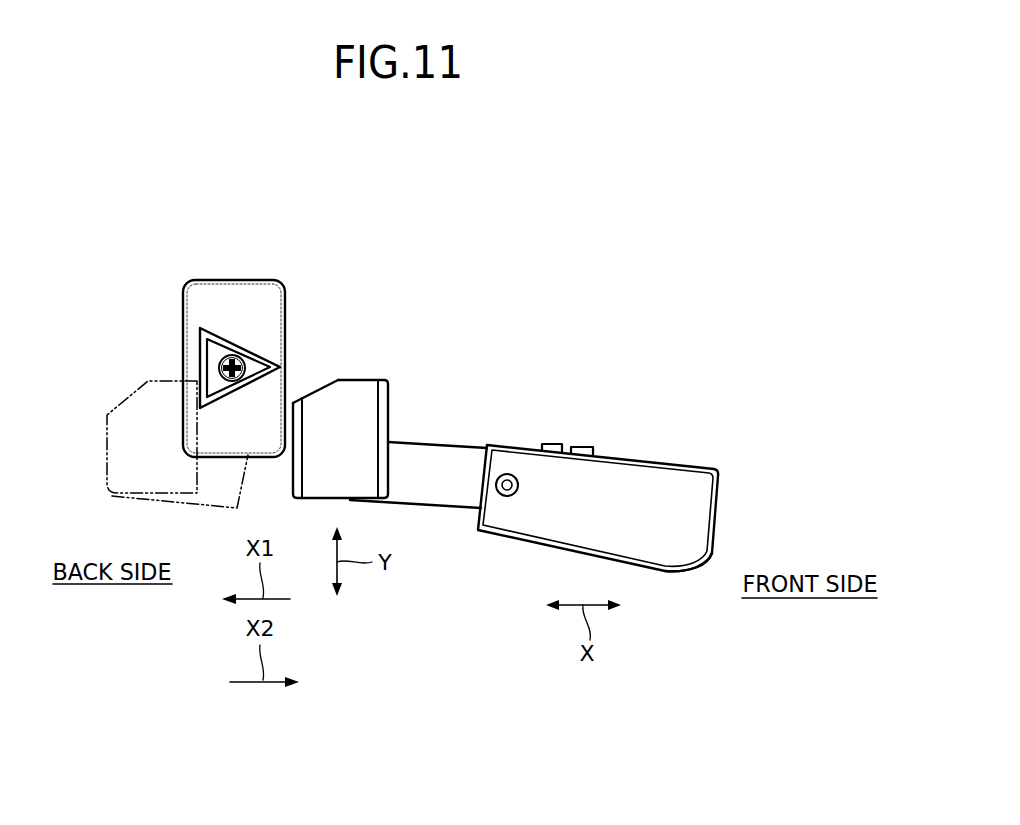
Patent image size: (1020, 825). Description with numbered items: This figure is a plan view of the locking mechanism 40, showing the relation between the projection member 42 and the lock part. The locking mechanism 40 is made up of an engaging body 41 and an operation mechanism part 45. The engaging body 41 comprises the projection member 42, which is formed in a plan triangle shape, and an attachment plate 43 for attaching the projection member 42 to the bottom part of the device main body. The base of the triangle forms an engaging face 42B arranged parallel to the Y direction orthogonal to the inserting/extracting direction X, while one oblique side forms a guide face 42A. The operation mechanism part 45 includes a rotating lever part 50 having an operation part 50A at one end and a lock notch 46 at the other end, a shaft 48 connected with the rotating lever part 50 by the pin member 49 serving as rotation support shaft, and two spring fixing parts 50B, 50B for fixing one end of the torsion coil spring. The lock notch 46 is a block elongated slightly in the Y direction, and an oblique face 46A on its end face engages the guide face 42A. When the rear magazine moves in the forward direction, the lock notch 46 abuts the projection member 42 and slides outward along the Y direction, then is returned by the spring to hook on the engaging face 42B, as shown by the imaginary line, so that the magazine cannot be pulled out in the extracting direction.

The locking mechanism 40 is at (505, 240).
The engaging body 41 is at (263, 226).
The projection member 42 is at (247, 348).
The guide face 42A is at (243, 400).
The engaging face 42B is at (200, 352).
The attachment plate 43 is at (215, 296).
The operation mechanism part 45 is at (310, 308).
The lock notch 46 is at (363, 400).
The oblique face 46A is at (323, 388).
The shaft 48 is at (447, 458).
The pin member 49 is at (507, 474).
The rotating lever part 50 is at (652, 461).
The operation part 50A is at (682, 551).
The spring fixing part 50B is at (553, 443).